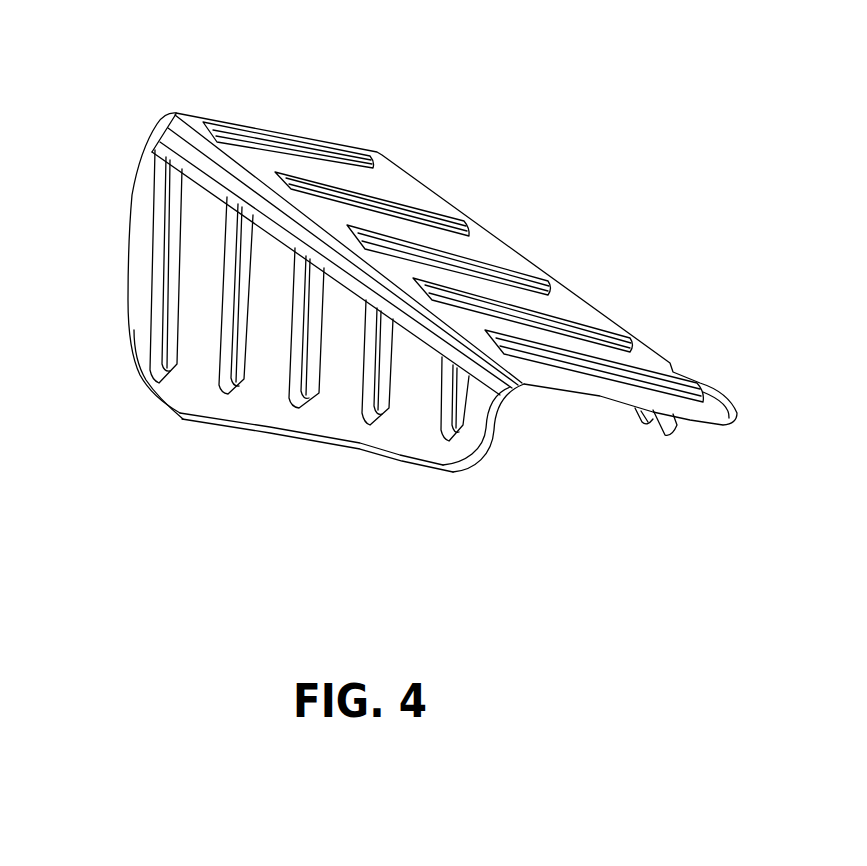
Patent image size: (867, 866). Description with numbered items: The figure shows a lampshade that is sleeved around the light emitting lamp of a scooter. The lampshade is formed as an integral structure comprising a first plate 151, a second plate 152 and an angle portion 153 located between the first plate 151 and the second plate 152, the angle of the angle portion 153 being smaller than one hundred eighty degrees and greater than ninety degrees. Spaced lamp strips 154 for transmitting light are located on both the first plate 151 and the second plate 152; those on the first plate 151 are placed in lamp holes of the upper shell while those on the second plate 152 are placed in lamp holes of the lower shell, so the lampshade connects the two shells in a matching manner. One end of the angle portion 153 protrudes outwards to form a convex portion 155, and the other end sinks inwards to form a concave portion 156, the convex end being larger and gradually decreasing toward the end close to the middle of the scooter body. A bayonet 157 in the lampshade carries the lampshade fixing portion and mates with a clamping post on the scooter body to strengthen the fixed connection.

The first plate 151 is at (398, 177).
The second plate 152 is at (190, 418).
The angle portion 153 is at (311, 230).
The lamp strips 154 is at (156, 283).
The convex portion 155 is at (163, 93).
The concave portion 156 is at (510, 432).
The bayonet 157 is at (657, 425).